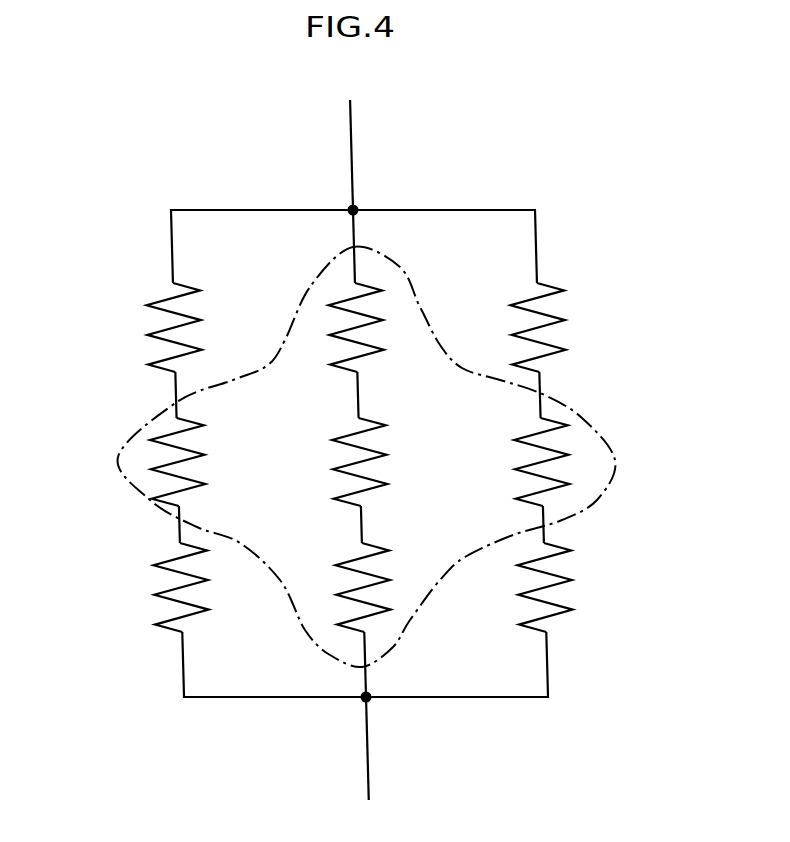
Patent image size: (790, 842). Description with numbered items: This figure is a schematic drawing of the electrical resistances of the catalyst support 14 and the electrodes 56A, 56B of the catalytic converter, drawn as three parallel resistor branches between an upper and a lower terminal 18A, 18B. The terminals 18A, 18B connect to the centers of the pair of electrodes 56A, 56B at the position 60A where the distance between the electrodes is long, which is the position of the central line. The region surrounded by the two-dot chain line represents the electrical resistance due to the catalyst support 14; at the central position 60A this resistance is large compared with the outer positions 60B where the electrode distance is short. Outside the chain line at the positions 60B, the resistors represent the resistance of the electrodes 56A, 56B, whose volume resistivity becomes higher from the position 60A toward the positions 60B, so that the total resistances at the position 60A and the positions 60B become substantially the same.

The catalyst support 14 is at (597, 425).
The terminal 18A is at (353, 140).
The terminal 18B is at (366, 745).
The electrode 56A is at (153, 323).
The electrode 56B is at (153, 593).
The position where the distance between the pair of electrodes is long 60A is at (360, 234).
The positions where the distance between the pair of electrodes is short 60B is at (170, 252).